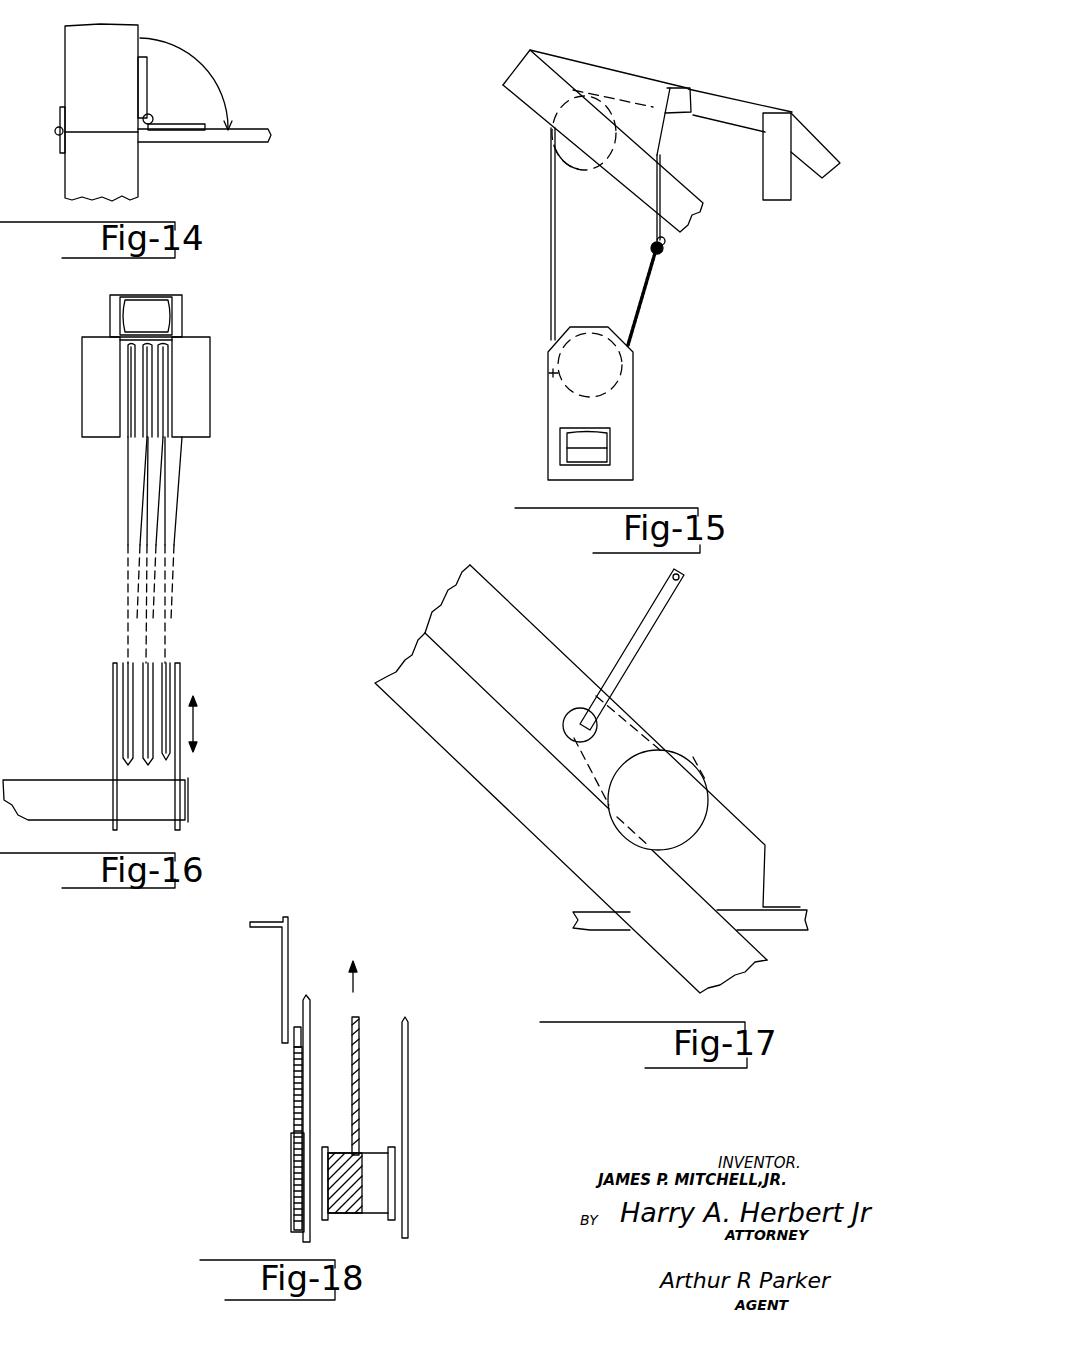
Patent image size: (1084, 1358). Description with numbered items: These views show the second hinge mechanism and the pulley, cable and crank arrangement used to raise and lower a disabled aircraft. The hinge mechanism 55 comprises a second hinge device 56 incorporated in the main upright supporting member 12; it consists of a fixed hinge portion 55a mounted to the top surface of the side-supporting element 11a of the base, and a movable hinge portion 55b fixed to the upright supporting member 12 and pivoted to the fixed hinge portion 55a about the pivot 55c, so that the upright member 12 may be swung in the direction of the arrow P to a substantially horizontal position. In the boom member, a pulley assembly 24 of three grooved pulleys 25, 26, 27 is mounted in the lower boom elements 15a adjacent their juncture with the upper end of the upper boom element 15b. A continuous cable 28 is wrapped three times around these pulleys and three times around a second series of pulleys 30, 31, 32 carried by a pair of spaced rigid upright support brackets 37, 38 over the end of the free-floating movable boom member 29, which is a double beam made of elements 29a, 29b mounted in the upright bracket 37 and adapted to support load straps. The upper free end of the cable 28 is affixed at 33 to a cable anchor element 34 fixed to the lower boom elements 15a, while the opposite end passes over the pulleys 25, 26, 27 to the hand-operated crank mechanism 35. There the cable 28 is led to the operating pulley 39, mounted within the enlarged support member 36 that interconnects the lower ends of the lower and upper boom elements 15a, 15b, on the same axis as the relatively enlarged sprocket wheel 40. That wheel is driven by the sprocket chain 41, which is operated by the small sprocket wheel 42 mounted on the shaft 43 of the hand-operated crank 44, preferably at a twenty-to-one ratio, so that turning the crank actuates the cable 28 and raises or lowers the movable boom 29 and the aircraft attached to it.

In FIG. 14, the side-supporting element 11a is at (238, 143).
In FIG. 14, the main upright supporting member 12 is at (70, 71).
In FIG. 16, the lower boom element 15a is at (105, 362).
In FIG. 15, the lower boom element 15a is at (518, 78).
In FIG. 17, the lower boom element 15a is at (427, 708).
In FIG. 16, the upper boom element 15b is at (160, 310).
In FIG. 15, the upper boom element 15b is at (710, 117).
In FIG. 16, the pulley assembly 24 is at (142, 365).
In FIG. 15, the pulley assembly 24 is at (540, 132).
In FIG. 16, the pulley 25 is at (165, 385).
In FIG. 15, the pulley 25 is at (578, 163).
In FIG. 16, the pulley 26 is at (148, 418).
In FIG. 16, the pulley 27 is at (130, 398).
In FIG. 16, the cable 28 is at (128, 473).
In FIG. 15, the cable 28 is at (560, 240).
In FIG. 18, the cable 28 is at (360, 982).
In FIG. 16, the movable boom member 29 is at (58, 808).
In FIG. 15, the movable boom member 29 is at (588, 461).
In FIG. 15, the double beam element 29a is at (600, 440).
In FIG. 15, the double beam element 29b is at (595, 457).
In FIG. 16, the pulley 30 is at (165, 750).
In FIG. 15, the pulley 30 is at (548, 374).
In FIG. 16, the pulley 31 is at (150, 728).
In FIG. 16, the pulley 32 is at (128, 685).
In FIG. 15, the cable affixing point 33 is at (661, 253).
In FIG. 15, the cable anchor element 34 is at (655, 226).
In FIG. 17, the hand-operated crank mechanism 35 is at (644, 709).
In FIG. 18, the hand-operated crank mechanism 35 is at (275, 1123).
In FIG. 17, the enlarged support member 36 is at (497, 602).
In FIG. 16, the upright support bracket 37 is at (182, 680).
In FIG. 15, the upright support bracket 37 is at (634, 398).
In FIG. 16, the upright support bracket 38 is at (113, 760).
In FIG. 18, the operating pulley 39 is at (378, 1212).
In FIG. 17, the sprocket wheel 40 is at (708, 776).
In FIG. 18, the sprocket wheel 40 is at (291, 1167).
In FIG. 17, the sprocket chain 41 is at (640, 771).
In FIG. 18, the sprocket chain 41 is at (293, 1083).
In FIG. 18, the sprocket wheel 42 is at (300, 1020).
In FIG. 17, the shaft 43 is at (569, 714).
In FIG. 18, the shaft 43 is at (302, 1040).
In FIG. 17, the hand-operated crank 44 is at (638, 628).
In FIG. 18, the hand-operated crank 44 is at (265, 920).
In FIG. 14, the hinge mechanism 55 is at (213, 100).
In FIG. 14, the fixed hinge portion 55a is at (178, 136).
In FIG. 14, the movable hinge portion 55b is at (148, 62).
In FIG. 14, the pivot 55c is at (152, 118).
In FIG. 14, the second hinge device 56 is at (152, 115).
In FIG. 14, the arrow P is at (242, 123).